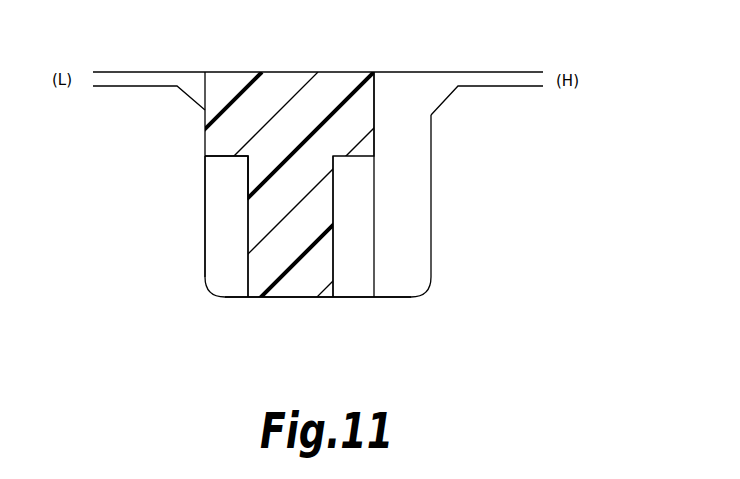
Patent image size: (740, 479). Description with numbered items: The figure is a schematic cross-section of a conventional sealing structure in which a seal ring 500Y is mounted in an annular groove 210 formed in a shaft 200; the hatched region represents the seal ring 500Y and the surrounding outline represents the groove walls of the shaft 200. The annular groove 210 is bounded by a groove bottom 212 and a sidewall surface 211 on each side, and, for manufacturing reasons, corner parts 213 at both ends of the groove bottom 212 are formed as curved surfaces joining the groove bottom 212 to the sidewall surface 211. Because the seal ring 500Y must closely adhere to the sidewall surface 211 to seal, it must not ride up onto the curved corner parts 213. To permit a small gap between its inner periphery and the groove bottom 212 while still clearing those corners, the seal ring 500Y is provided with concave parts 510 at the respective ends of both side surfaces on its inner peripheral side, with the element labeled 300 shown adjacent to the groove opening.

The substrate / mounting board 300 is at (318, 54).
The shaft 200 is at (437, 184).
The annular groove 210 is at (420, 212).
The sidewall surface 211 is at (207, 170).
The groove bottom 212 is at (348, 297).
The corner part 213 is at (207, 286).
The seal ring 500Y is at (382, 128).
The concave part 510 is at (334, 192).